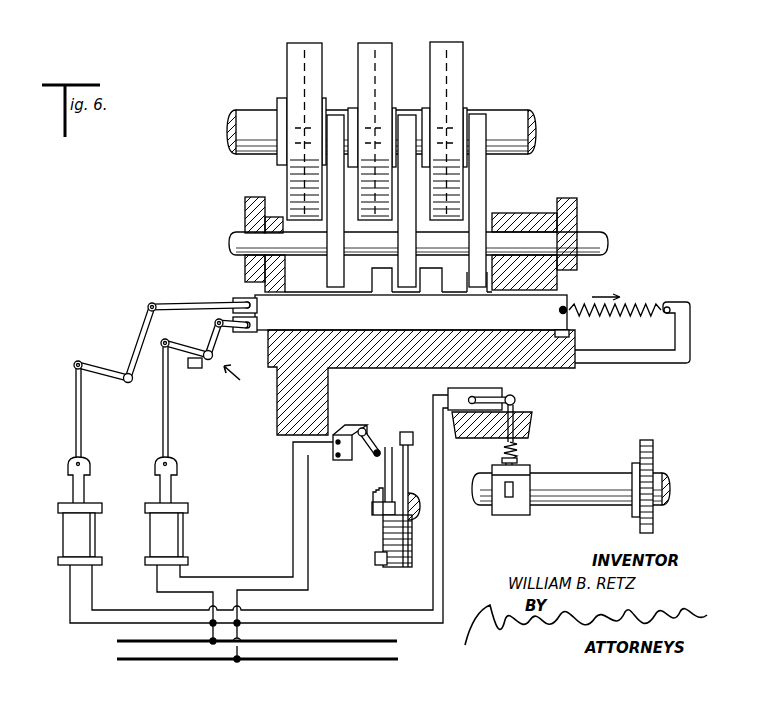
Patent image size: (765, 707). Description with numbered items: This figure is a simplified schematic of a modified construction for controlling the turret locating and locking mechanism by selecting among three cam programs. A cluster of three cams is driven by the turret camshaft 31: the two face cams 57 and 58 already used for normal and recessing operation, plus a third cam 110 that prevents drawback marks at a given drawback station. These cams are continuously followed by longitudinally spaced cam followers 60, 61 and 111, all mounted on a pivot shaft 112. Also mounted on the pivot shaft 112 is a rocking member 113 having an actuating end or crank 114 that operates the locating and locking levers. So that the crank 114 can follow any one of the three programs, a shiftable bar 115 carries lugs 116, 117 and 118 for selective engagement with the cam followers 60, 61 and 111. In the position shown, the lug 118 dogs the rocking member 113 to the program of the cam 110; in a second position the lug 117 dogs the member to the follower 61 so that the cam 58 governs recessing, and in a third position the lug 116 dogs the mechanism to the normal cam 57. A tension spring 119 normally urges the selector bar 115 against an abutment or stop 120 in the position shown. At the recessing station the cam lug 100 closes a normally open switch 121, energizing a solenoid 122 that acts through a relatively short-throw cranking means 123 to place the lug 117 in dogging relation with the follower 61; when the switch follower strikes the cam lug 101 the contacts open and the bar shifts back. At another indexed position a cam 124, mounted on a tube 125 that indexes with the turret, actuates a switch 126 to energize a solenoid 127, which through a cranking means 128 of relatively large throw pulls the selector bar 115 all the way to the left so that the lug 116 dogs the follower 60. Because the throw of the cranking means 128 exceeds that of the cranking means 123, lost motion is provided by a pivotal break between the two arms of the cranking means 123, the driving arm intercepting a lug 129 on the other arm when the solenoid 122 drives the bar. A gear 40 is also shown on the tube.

The turret camshaft 31 is at (243, 110).
The face cam 57 is at (297, 52).
The face cam 58 is at (372, 52).
The cam follower 60 is at (334, 114).
The cam follower 61 is at (404, 114).
The third cam 110 is at (448, 52).
The cam follower 111 is at (480, 177).
The pivot shaft 112 is at (585, 232).
The rocking member 113 is at (545, 282).
The actuating end or crank 114 is at (313, 400).
The shiftable bar 115 is at (387, 328).
The lug 116 is at (382, 274).
The lug 117 is at (428, 276).
The lug 118 is at (470, 282).
The tension spring 119 is at (636, 318).
The abutment or stop 120 is at (572, 316).
The normally open switch 121 is at (360, 449).
The solenoid 122 is at (184, 529).
The cranking means 123 is at (245, 382).
The cam 124 is at (528, 468).
The tube 125 is at (584, 497).
The switch 126 is at (486, 386).
The solenoid 127 is at (63, 536).
The cranking means 128 is at (128, 356).
The lug 129 is at (194, 369).
The cam lug 100 is at (373, 504).
The cam lug 101 is at (374, 559).
The gear 40 is at (652, 452).